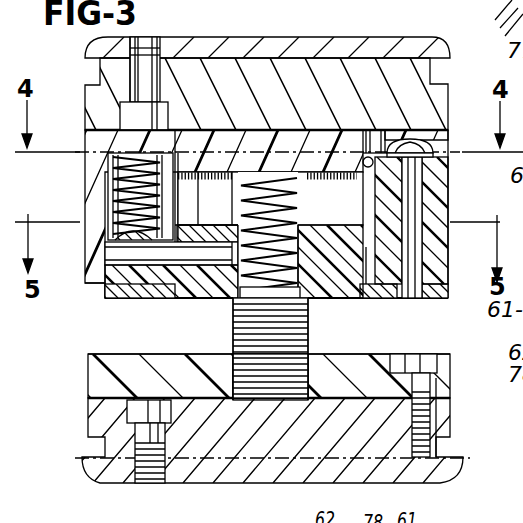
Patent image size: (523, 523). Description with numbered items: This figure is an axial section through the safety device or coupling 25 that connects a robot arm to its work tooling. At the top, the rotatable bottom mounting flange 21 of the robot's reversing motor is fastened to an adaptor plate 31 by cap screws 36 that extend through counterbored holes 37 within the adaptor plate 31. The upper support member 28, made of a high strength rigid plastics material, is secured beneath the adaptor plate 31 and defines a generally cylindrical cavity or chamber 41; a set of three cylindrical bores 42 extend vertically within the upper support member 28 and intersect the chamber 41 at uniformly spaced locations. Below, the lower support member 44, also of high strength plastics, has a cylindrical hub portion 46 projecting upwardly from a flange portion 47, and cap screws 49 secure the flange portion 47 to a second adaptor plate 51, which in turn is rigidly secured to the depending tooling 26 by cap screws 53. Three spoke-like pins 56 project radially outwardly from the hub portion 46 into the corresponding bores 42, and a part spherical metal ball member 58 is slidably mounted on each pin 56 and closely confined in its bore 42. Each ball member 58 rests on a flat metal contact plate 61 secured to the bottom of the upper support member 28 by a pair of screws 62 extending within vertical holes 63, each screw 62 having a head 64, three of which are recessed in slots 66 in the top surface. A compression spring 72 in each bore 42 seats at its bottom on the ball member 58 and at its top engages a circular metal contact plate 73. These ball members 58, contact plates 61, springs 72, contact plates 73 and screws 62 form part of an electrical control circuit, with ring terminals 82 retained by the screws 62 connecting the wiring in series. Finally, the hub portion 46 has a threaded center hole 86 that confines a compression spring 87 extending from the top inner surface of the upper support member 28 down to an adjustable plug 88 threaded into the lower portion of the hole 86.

The bottom mounting flange 21 is at (280, 40).
The adaptor plate 31 is at (308, 60).
The cap screws 36 is at (160, 42).
The counterbored holes 37 is at (128, 88).
The circular metal contact plate 73 is at (120, 128).
The compression spring 72 is at (112, 142).
The upper support member 28 is at (86, 167).
The cylindrical bores 42 is at (106, 186).
The cylindrical cavity or chamber 41 is at (220, 203).
The spoke-like pins 56 is at (108, 250).
The part spherical metal ball member 58 is at (120, 300).
The flat metal contact plate 61 is at (148, 300).
The safety device or coupling 25 is at (77, 296).
The compression spring 87 is at (299, 205).
The ring terminals 82 is at (367, 170).
The vertical holes 63 is at (447, 202).
The screw head 64 is at (433, 130).
The screws 62 is at (447, 181).
The slots 66 is at (405, 132).
The cylindrical hub portion 46 is at (352, 322).
The adjustable plug 88 is at (290, 398).
The threaded center hole 86 is at (355, 345).
The lower support member 44 is at (88, 371).
The flange portion 47 is at (112, 354).
The tooling 26 is at (308, 482).
The cap screws 53 is at (122, 476).
The adaptor plate 51 is at (402, 470).
The cap screws 49 is at (432, 386).